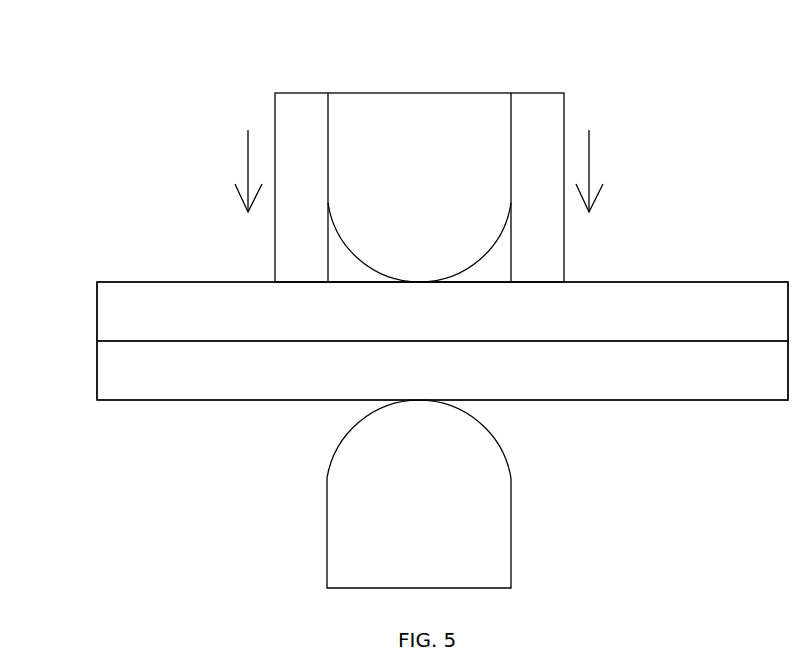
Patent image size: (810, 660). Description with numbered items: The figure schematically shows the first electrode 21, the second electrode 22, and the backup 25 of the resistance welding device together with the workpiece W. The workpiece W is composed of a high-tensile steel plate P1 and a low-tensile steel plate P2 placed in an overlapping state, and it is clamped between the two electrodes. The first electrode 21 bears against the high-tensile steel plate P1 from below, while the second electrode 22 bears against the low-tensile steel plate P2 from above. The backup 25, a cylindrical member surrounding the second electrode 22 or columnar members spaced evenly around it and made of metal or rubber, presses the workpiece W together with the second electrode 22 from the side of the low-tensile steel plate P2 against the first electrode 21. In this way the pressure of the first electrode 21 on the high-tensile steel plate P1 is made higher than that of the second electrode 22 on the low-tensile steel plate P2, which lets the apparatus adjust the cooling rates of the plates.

The first electrode 21 is at (482, 516).
The second electrode 22 is at (428, 105).
The backup 25 is at (547, 113).
The workpiece W is at (120, 256).
The high-tensile steel plate P1 is at (117, 373).
The low-tensile steel plate P2 is at (117, 313).